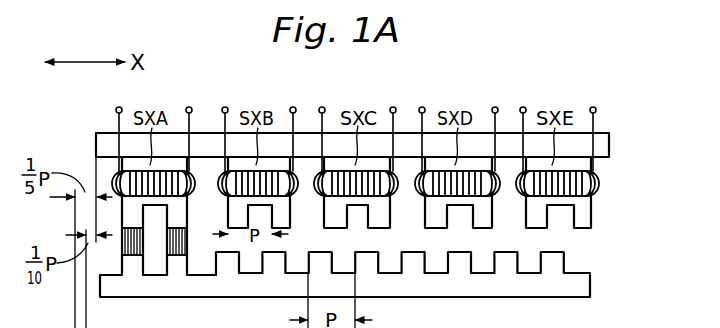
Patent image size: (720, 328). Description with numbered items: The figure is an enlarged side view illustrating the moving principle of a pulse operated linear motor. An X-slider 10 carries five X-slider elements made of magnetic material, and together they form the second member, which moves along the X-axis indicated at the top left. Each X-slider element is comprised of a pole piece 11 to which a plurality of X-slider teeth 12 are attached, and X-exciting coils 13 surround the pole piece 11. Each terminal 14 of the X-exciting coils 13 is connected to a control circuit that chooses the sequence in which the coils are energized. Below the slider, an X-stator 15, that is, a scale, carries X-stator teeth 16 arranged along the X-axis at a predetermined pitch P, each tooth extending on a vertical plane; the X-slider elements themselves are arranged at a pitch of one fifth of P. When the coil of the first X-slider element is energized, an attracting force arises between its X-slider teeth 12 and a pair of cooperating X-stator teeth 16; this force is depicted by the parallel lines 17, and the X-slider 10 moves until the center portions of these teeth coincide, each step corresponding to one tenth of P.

The X-slider 10 is at (335, 142).
The pole piece 11 is at (583, 166).
The X-slider teeth 12 is at (586, 222).
The X-exciting coils 13 is at (596, 190).
The terminal 14 is at (359, 119).
The X-stator 15 is at (366, 290).
The X-stator teeth 16 is at (272, 262).
The parallel lines 17 is at (185, 238).